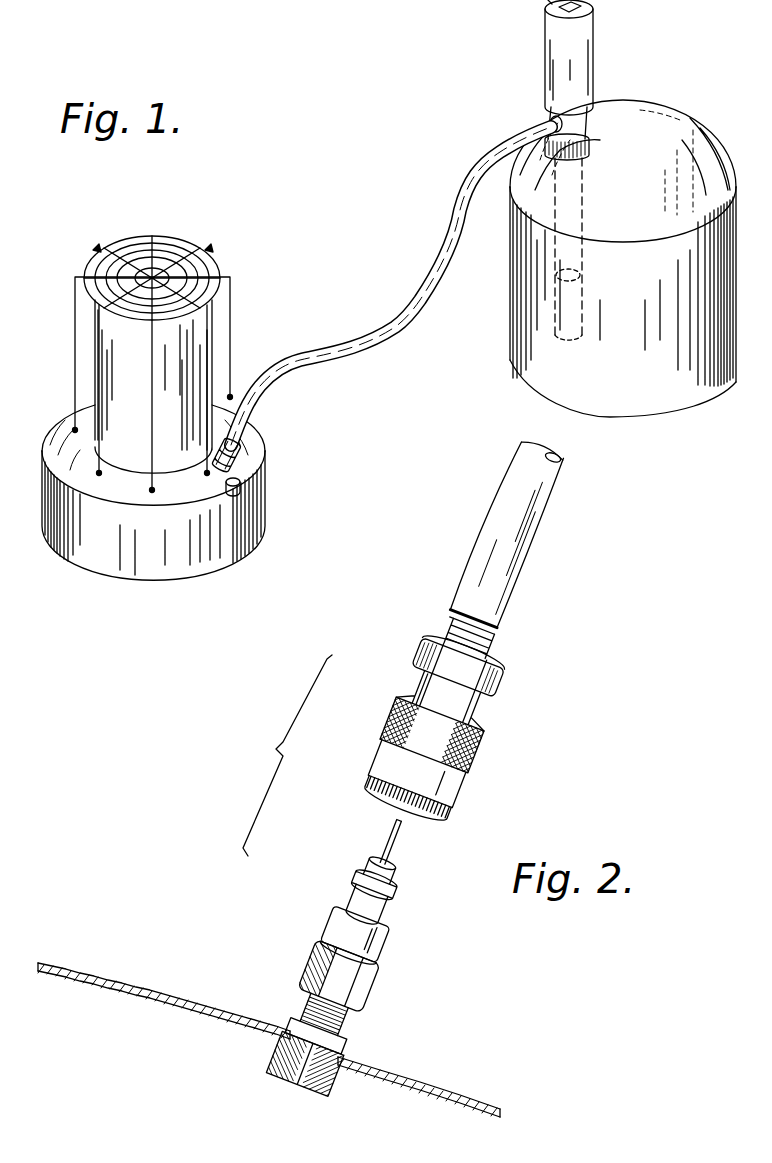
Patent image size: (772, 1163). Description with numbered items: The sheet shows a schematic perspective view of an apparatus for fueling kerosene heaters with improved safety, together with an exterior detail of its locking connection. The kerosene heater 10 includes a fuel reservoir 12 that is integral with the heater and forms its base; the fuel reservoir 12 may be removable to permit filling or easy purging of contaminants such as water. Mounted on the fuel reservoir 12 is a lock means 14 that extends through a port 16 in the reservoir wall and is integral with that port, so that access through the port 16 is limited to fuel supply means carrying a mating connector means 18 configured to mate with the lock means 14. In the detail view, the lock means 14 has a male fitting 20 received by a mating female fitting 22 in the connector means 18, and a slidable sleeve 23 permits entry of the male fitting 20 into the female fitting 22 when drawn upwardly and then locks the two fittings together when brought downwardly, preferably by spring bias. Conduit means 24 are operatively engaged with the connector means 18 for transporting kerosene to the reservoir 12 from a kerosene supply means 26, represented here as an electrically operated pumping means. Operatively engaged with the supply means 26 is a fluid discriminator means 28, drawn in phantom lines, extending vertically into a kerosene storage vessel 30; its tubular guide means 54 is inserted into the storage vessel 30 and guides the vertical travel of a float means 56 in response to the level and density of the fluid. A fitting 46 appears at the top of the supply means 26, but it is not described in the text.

In FIG. 1, the kerosene heater 10 is at (186, 226).
In FIG. 1, the fuel reservoir 12 is at (128, 553).
In FIG. 2, the fuel reservoir 12 is at (112, 983).
In FIG. 1, the lock means 14 is at (241, 487).
In FIG. 2, the lock means 14 is at (390, 987).
In FIG. 2, the port 16 is at (292, 1080).
In FIG. 1, the mating connector means 18 is at (243, 457).
In FIG. 2, the mating connector means 18 is at (486, 751).
In FIG. 2, the male fitting 20 is at (386, 828).
In FIG. 2, the female fitting 22 is at (432, 812).
In FIG. 2, the slidable sleeve 23 is at (373, 755).
In FIG. 1, the conduit means 24 is at (412, 296).
In FIG. 2, the conduit means 24 is at (529, 548).
In FIG. 1, the kerosene supply means 26 is at (604, 38).
In FIG. 1, the fluid discriminator means 28 is at (543, 305).
In FIG. 1, the kerosene storage vessel 30 is at (667, 121).
In FIG. 1, the handle end fitting 46 is at (545, 3).
In FIG. 1, the tubular guide means 54 is at (590, 333).
In FIG. 1, the float means 56 is at (556, 269).